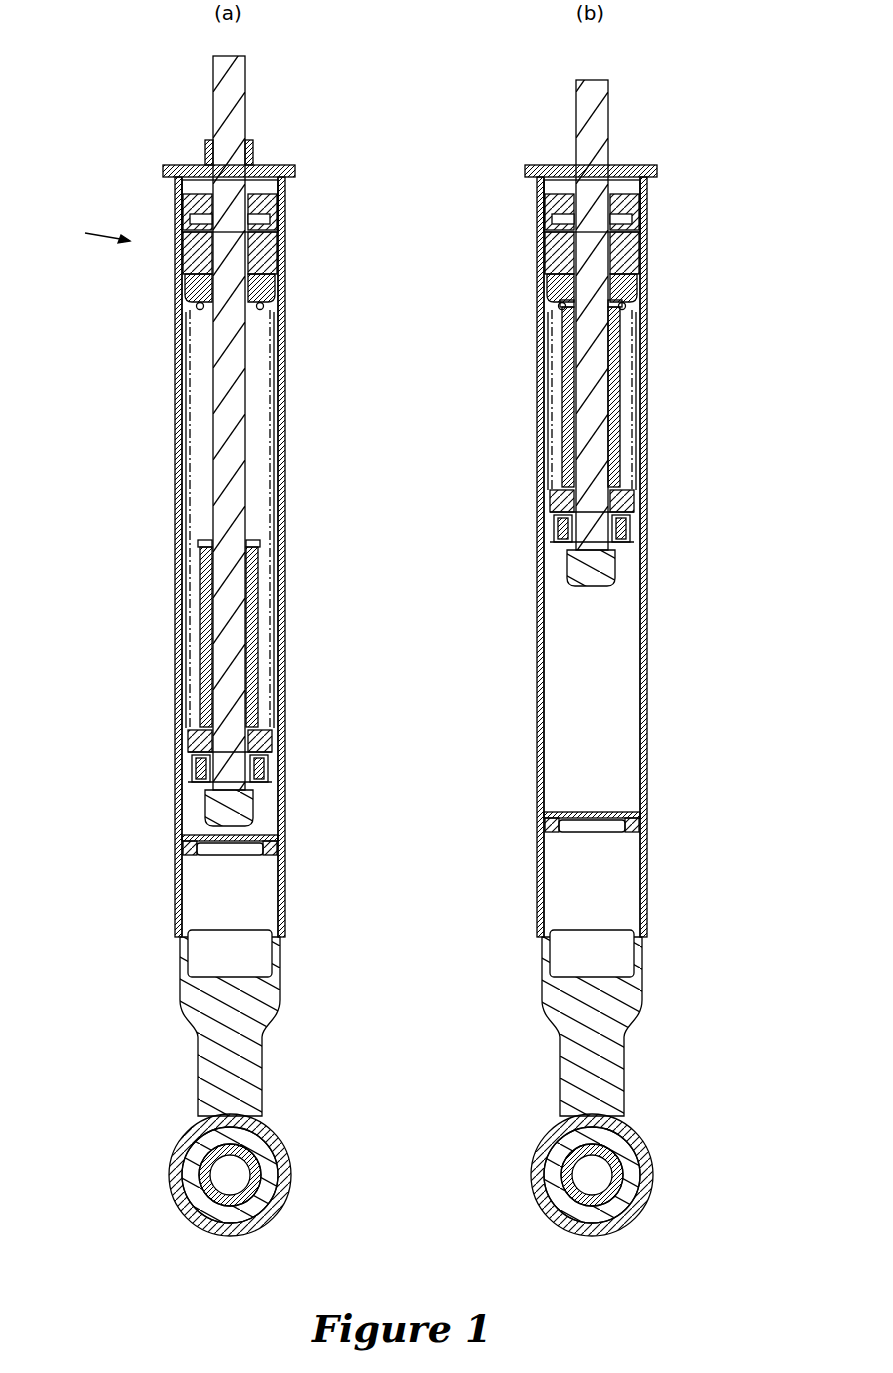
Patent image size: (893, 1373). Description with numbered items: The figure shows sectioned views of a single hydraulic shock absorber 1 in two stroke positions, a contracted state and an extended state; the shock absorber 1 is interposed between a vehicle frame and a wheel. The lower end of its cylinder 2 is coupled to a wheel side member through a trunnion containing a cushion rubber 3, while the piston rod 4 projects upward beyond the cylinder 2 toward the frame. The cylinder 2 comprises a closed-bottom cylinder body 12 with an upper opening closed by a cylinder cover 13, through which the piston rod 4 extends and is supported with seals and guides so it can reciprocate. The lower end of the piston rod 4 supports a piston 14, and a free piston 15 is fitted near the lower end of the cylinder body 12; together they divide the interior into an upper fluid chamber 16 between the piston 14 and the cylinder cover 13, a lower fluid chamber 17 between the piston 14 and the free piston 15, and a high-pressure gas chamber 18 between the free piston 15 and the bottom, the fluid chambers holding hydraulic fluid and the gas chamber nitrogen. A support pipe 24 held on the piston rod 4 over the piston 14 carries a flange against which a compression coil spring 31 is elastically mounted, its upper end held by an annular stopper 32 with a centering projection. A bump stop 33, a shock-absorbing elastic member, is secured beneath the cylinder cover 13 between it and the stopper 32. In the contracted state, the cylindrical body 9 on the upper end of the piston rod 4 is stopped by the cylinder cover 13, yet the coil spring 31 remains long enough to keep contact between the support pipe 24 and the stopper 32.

The hydraulic shock absorber 1 is at (685, 240).
The cylinder 2 is at (174, 400).
The cushion rubber 3 is at (205, 1174).
The piston rod 4 is at (247, 118).
The cylindrical body 9 is at (204, 158).
The cylinder body 12 is at (175, 487).
The cylinder cover 13 is at (285, 206).
The piston 14 is at (196, 776).
The free piston 15 is at (279, 836).
The upper fluid chamber 16 is at (270, 376).
The lower fluid chamber 17 is at (195, 822).
The high-pressure gas chamber 18 is at (200, 906).
The support pipe 24 is at (260, 633).
The compression coil spring 31 is at (265, 306).
The stopper 32 is at (272, 278).
The bump stop 33 is at (272, 250).